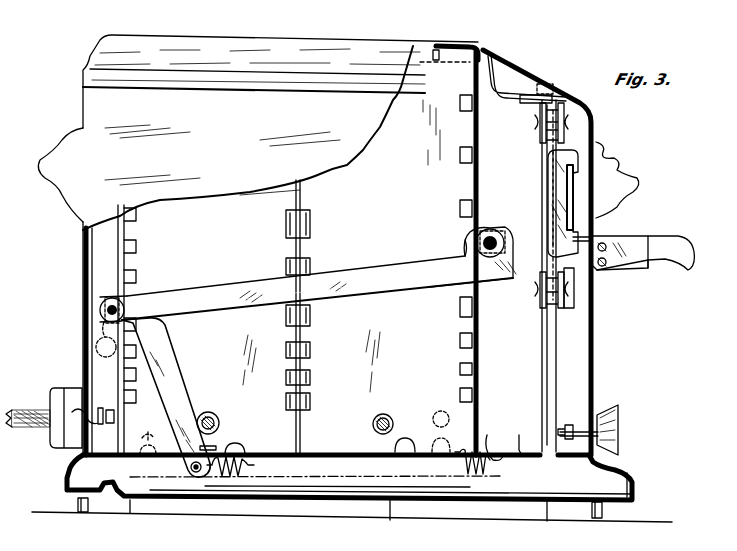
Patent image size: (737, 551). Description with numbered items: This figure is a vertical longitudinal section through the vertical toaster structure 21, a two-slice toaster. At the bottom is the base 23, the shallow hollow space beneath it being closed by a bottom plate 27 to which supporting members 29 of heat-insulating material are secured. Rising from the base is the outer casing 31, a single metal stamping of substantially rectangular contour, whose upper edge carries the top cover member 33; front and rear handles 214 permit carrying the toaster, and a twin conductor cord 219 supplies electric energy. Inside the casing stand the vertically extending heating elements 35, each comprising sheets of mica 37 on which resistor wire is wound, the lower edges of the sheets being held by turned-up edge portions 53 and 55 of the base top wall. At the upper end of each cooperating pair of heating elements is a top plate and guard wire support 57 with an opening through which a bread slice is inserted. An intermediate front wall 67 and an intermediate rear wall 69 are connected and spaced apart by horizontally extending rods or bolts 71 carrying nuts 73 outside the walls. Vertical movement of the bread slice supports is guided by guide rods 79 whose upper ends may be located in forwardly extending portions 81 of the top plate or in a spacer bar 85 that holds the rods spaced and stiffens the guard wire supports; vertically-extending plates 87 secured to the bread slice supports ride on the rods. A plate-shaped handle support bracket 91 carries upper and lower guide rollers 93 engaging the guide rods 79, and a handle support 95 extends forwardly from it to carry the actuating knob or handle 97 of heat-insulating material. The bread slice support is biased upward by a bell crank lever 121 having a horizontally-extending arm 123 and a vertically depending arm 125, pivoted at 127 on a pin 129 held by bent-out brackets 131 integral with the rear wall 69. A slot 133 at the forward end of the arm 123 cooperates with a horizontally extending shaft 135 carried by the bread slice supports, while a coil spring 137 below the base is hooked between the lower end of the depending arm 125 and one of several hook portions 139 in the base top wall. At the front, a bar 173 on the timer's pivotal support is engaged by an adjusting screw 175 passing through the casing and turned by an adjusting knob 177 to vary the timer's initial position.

The vertical toaster structure 21 is at (74, 261).
The base 23 is at (70, 467).
The bottom plate 27 is at (500, 505).
The supporting members 29 is at (101, 505).
The outer casing 31 is at (84, 345).
The top cover member 33 is at (252, 48).
The heating elements 35 is at (222, 223).
The sheets of mica 37 is at (240, 360).
The turned-up edge portion 53 is at (296, 440).
The turned-up edge portion 55 is at (236, 452).
The top plate and guard wire support 57 is at (505, 73).
The intermediate front wall 67 is at (482, 175).
The intermediate rear wall 69 is at (118, 245).
The rods or bolts 71 is at (476, 48).
The nuts 73 is at (498, 58).
The guide rods 79 is at (546, 386).
The forwardly extending portions of the top plate 81 is at (545, 88).
The spacer bar 85 is at (563, 97).
The vertically-extending plates 87 is at (540, 192).
The handle support bracket 91 is at (576, 312).
The guide rollers 93 is at (540, 130).
The handle support 95 is at (585, 248).
The actuating knob or handle 97 is at (645, 245).
The bell crank lever 121 is at (224, 292).
The horizontally-extending arm 123 is at (362, 296).
The vertically depending arm 125 is at (175, 396).
The pivot 127 is at (92, 312).
The pin 129 is at (114, 298).
The bent-out brackets 131 is at (110, 339).
The slot 133 is at (465, 250).
The horizontally extending shaft 135 is at (493, 228).
The coil spring 137 is at (250, 466).
The hook portions 139 is at (523, 452).
The bar 173 is at (585, 425).
The adjusting screw 175 is at (566, 425).
The adjusting knob 177 is at (614, 422).
The handles 214 is at (58, 165).
The twin conductor cord 219 is at (38, 408).